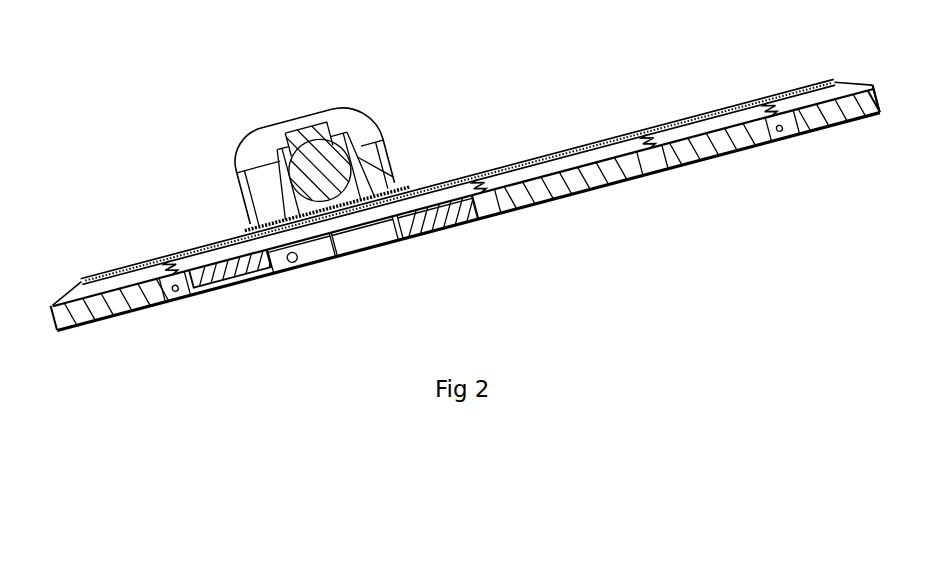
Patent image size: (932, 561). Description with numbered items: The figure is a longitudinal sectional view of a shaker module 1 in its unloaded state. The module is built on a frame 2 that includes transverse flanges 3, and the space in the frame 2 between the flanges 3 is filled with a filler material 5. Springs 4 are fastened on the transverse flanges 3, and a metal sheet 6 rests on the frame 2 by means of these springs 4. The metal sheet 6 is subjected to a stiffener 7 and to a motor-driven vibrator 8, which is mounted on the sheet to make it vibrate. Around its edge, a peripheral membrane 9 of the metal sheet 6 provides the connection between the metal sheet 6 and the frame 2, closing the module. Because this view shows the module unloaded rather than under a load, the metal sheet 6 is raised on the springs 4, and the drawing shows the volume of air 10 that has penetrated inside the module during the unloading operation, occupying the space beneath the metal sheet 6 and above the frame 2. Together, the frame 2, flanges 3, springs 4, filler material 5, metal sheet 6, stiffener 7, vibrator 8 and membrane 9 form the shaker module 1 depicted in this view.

The shaker module 1 is at (163, 343).
The frame 2 is at (868, 119).
The transverse flanges 3 is at (668, 167).
The springs 4 is at (657, 135).
The filler material 5 is at (548, 199).
The metal sheet 6 is at (795, 92).
The stiffener 7 is at (265, 262).
The motor-driven vibrator 8 is at (346, 151).
The peripheral membrane 9 is at (77, 281).
The volume of air 10 is at (565, 157).